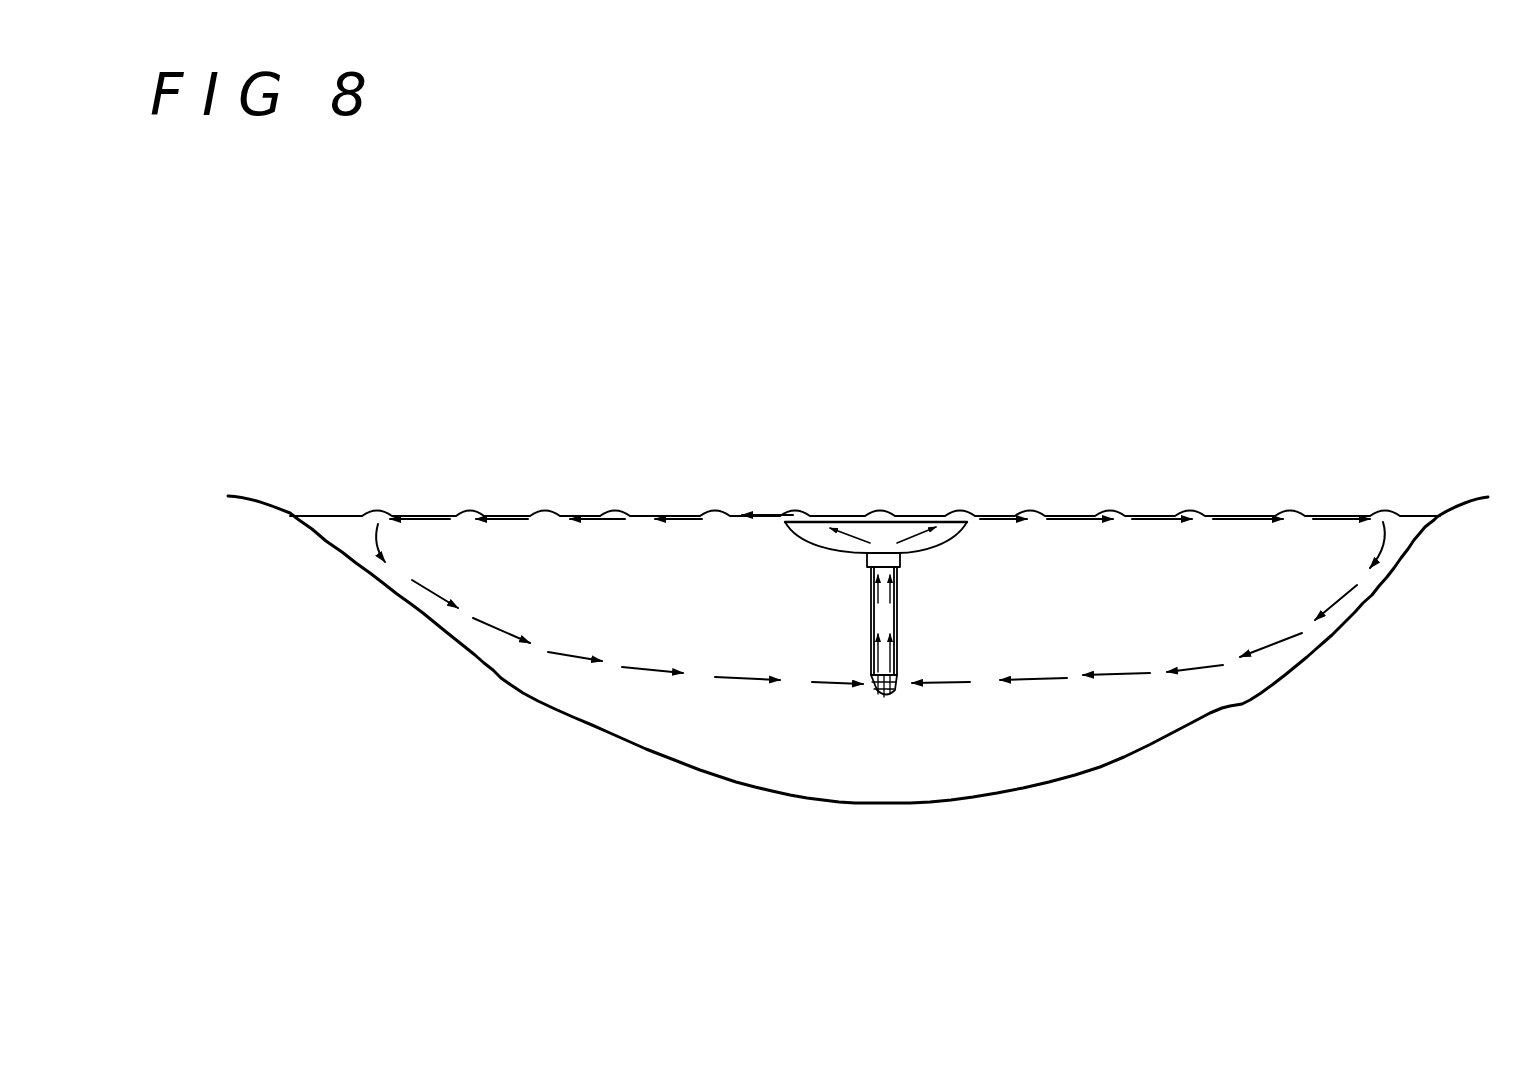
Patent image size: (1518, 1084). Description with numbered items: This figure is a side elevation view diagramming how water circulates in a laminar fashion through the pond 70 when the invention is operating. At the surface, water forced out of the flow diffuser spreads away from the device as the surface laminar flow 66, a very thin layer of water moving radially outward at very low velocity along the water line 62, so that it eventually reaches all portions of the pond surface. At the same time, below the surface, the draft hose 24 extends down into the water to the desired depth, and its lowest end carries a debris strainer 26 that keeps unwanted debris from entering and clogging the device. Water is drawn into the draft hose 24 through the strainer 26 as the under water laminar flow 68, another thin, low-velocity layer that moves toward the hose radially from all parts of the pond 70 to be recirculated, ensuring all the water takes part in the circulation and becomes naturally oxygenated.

The draft hose 24 is at (866, 612).
The debris strainer 26 is at (871, 693).
The water line 62 is at (332, 510).
The surface laminar flow 66 is at (680, 518).
The under water laminar flow 68 is at (730, 680).
The pond 70 is at (418, 620).